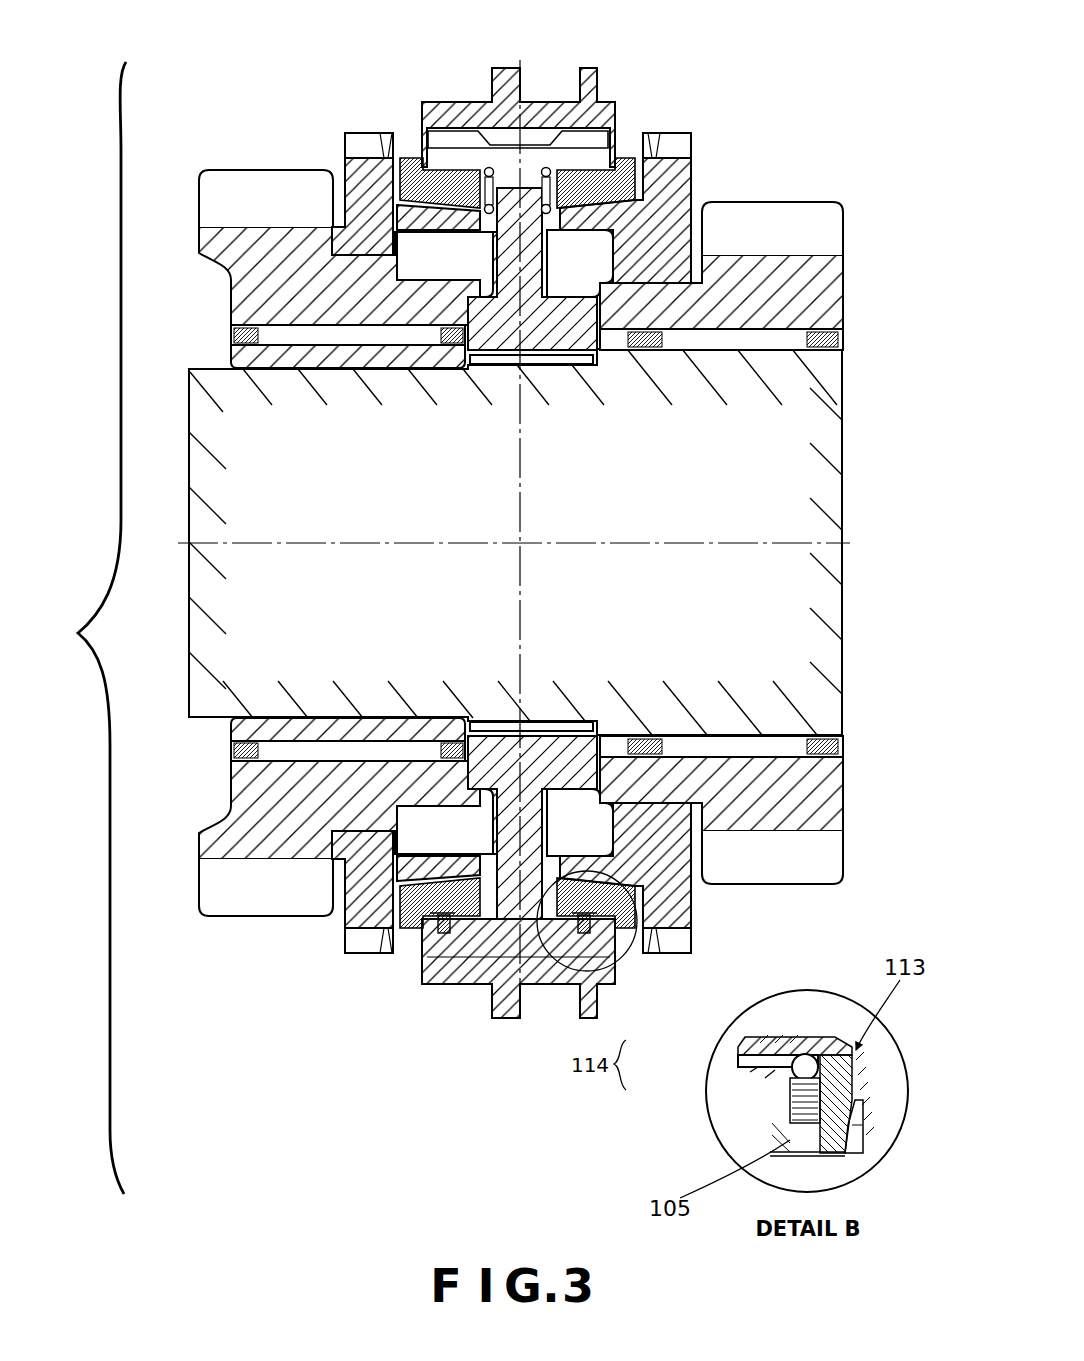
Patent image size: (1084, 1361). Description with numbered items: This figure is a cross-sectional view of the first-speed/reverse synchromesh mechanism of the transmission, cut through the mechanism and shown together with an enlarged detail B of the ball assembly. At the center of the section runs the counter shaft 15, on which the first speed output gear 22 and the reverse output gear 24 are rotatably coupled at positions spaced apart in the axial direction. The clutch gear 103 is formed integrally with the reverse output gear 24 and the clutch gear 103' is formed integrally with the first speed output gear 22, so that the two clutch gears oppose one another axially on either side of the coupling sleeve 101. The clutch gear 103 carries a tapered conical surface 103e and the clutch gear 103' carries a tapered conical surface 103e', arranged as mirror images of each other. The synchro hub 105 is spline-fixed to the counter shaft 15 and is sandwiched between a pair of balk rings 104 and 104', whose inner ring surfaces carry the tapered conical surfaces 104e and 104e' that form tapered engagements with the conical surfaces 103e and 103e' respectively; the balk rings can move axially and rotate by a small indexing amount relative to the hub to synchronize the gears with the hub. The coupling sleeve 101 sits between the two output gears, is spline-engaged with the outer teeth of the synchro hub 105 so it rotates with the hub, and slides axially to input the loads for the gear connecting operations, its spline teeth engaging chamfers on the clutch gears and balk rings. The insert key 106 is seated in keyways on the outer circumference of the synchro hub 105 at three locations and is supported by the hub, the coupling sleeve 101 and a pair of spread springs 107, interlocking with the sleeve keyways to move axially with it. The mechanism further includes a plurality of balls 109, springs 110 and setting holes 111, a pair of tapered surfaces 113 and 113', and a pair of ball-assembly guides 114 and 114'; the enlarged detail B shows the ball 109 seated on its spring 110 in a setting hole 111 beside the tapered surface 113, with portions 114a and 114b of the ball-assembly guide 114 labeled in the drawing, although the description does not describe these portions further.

The counter shaft 15 is at (842, 648).
The first speed output gear 22 is at (243, 187).
The reverse output gear 24 is at (800, 217).
The coupling sleeve 101 is at (494, 78).
The clutch gear 103 is at (649, 168).
The clutch gear 103' is at (323, 172).
The tapered conical surface 103e is at (574, 833).
The tapered conical surface 103e' is at (444, 850).
The balk ring 104 is at (620, 130).
The balk ring 104' is at (408, 130).
The tapered conical surface 104e is at (580, 255).
The tapered conical surface 104e' is at (438, 240).
The synchro hub 105 is at (557, 342).
The insert key 106 is at (463, 137).
The spread springs 107 is at (545, 214).
The balls 109 is at (797, 1055).
The springs 110 is at (788, 1098).
The setting holes 111 is at (835, 1154).
The tapered surface 113 is at (596, 862).
The tapered surface 113' is at (437, 873).
The ball-assembly guide 114 is at (562, 971).
The ball-assembly guide 114' is at (447, 971).
The pin 114a is at (752, 1066).
The plate 114b is at (750, 1056).
The detail B is at (622, 957).